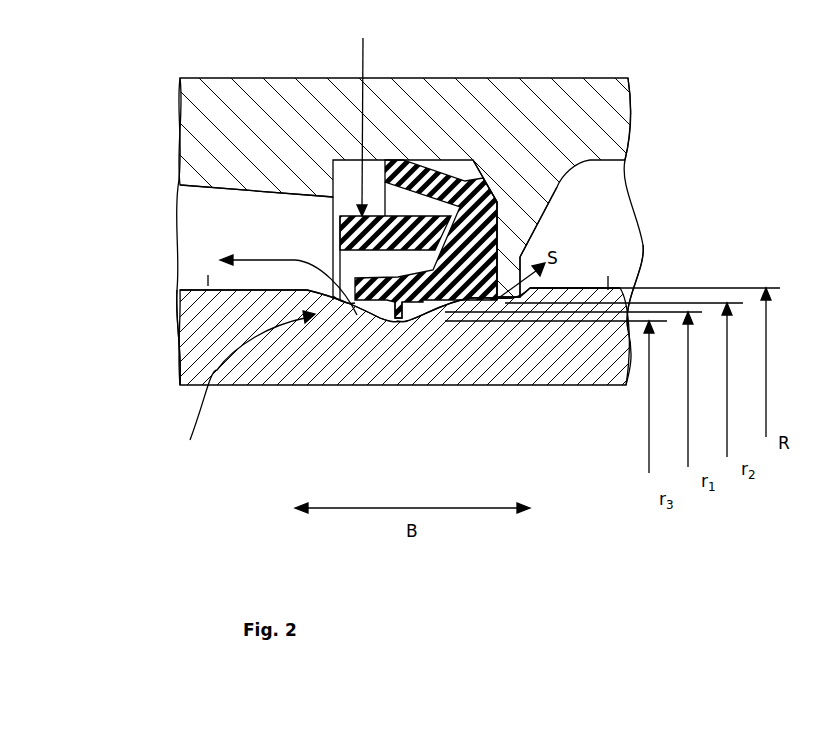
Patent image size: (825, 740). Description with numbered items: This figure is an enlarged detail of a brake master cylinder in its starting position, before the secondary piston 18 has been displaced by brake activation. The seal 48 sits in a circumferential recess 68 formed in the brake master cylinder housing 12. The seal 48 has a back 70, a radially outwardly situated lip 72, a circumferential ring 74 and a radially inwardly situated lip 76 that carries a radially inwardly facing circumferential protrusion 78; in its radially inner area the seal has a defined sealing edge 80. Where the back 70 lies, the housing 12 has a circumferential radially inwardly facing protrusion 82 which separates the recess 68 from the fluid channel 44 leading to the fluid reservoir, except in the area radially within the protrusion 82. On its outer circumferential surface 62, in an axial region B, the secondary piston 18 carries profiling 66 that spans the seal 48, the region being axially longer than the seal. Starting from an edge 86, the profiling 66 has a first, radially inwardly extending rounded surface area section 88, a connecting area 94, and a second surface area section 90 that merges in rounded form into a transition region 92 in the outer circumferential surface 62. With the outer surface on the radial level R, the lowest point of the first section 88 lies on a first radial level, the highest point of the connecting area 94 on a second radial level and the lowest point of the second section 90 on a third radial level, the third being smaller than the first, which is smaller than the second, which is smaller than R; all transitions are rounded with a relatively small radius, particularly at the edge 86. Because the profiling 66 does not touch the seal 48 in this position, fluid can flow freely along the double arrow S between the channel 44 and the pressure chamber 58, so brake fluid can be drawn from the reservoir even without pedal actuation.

The brake master cylinder housing 12 is at (285, 115).
The secondary piston 18 is at (200, 303).
The fluid channel 44 is at (600, 185).
The seal 48 is at (366, 113).
The pressure chamber 58 is at (213, 210).
The outer circumferential surface 62 is at (610, 277).
The profiling 66 is at (247, 388).
The circumferential recess 68 is at (448, 165).
The back 70 is at (490, 225).
The radially outwardly situated lip 72 is at (403, 175).
The circumferential ring 74 is at (333, 238).
The radially inwardly situated lip 76 is at (333, 302).
The circumferential protrusion 78 is at (398, 322).
The sealing edge 80 is at (490, 305).
The protrusion 82 is at (511, 242).
The edge 86 is at (622, 295).
The first surface area section 88 is at (522, 300).
The second surface area section 90 is at (368, 313).
The transition region 92 is at (313, 291).
The connecting area 94 is at (455, 305).